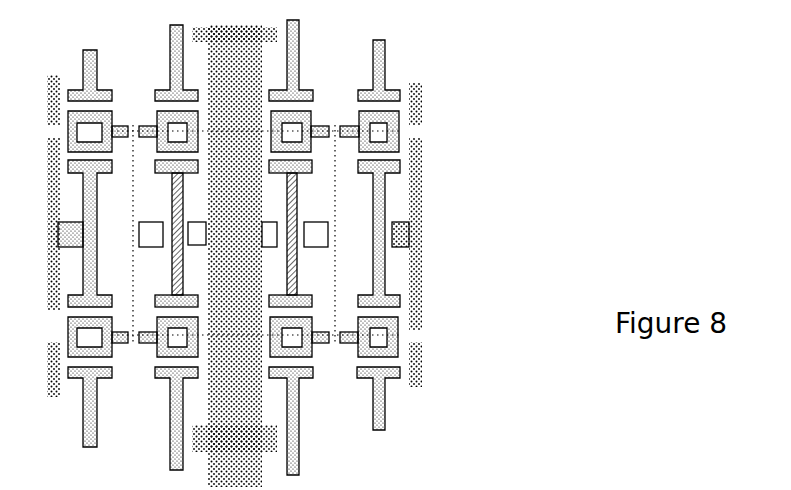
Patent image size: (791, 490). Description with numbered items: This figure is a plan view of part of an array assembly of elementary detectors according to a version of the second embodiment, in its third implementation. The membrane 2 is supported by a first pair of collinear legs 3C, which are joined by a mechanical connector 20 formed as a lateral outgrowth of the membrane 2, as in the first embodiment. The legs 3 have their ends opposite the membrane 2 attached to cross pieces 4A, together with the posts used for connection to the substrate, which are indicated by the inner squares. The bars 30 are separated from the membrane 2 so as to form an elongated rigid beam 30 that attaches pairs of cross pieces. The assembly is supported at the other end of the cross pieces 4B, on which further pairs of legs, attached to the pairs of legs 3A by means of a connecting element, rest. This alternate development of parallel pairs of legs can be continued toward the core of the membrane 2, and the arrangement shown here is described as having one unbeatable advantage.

The membrane 2 is at (234, 256).
The legs 3 is at (112, 233).
The pairs of legs 3A is at (97, 234).
The first pair of collinear legs 3C is at (345, 241).
The cross pieces 4A is at (234, 253).
The cross pieces 4B is at (233, 244).
The mechanical connector 20 is at (234, 234).
The beam 30 is at (233, 222).